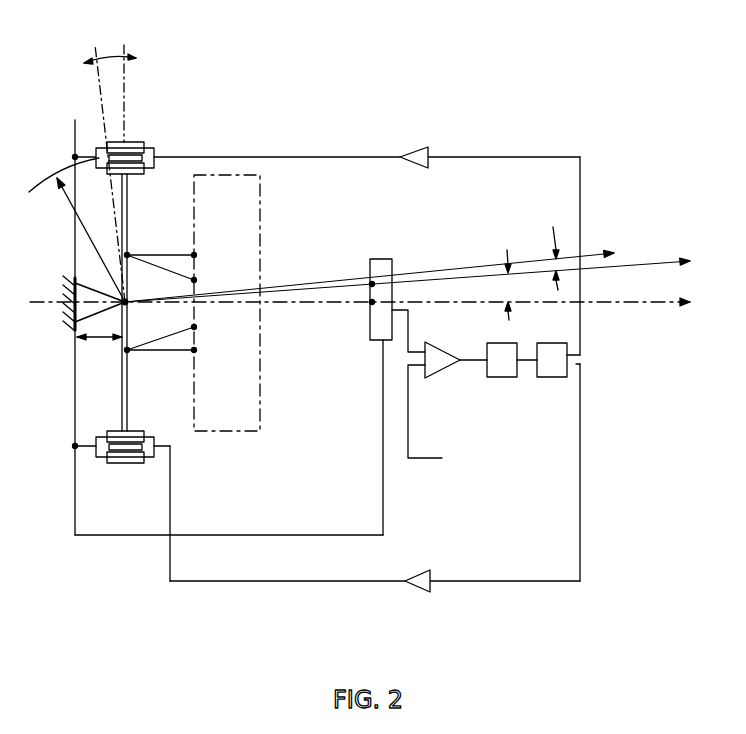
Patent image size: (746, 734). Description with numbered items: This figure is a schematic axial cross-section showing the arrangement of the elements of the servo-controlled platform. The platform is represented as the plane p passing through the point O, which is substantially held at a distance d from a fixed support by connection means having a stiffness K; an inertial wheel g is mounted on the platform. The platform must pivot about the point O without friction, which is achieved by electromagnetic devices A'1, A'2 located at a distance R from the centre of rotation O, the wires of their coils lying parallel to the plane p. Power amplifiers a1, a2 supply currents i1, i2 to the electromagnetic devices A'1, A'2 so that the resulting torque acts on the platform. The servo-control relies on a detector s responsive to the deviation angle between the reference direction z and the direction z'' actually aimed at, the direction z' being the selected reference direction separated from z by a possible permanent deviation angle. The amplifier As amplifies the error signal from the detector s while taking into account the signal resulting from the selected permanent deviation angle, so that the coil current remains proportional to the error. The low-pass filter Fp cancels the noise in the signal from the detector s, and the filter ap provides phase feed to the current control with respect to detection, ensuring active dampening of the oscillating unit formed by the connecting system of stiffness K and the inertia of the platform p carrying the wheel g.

The electromagnetic device A'1 is at (118, 139).
The electromagnetic device A'2 is at (122, 482).
The current i1 is at (367, 146).
The current i2 is at (375, 516).
The power amplifier a1 is at (414, 146).
The power amplifier a2 is at (418, 589).
The distance from the centre of rotation R is at (77, 230).
The inertial wheel g is at (246, 238).
The detector s is at (392, 268).
The reference direction z is at (367, 302).
The selected reference direction z' is at (415, 276).
The direction actually aimed at z'' is at (380, 270).
The point O is at (131, 297).
The stiffness K is at (78, 333).
The distance d is at (85, 338).
The plane p is at (130, 396).
The amplifier As is at (445, 372).
The low-pass filter Fp is at (506, 370).
The filter ap is at (556, 370).